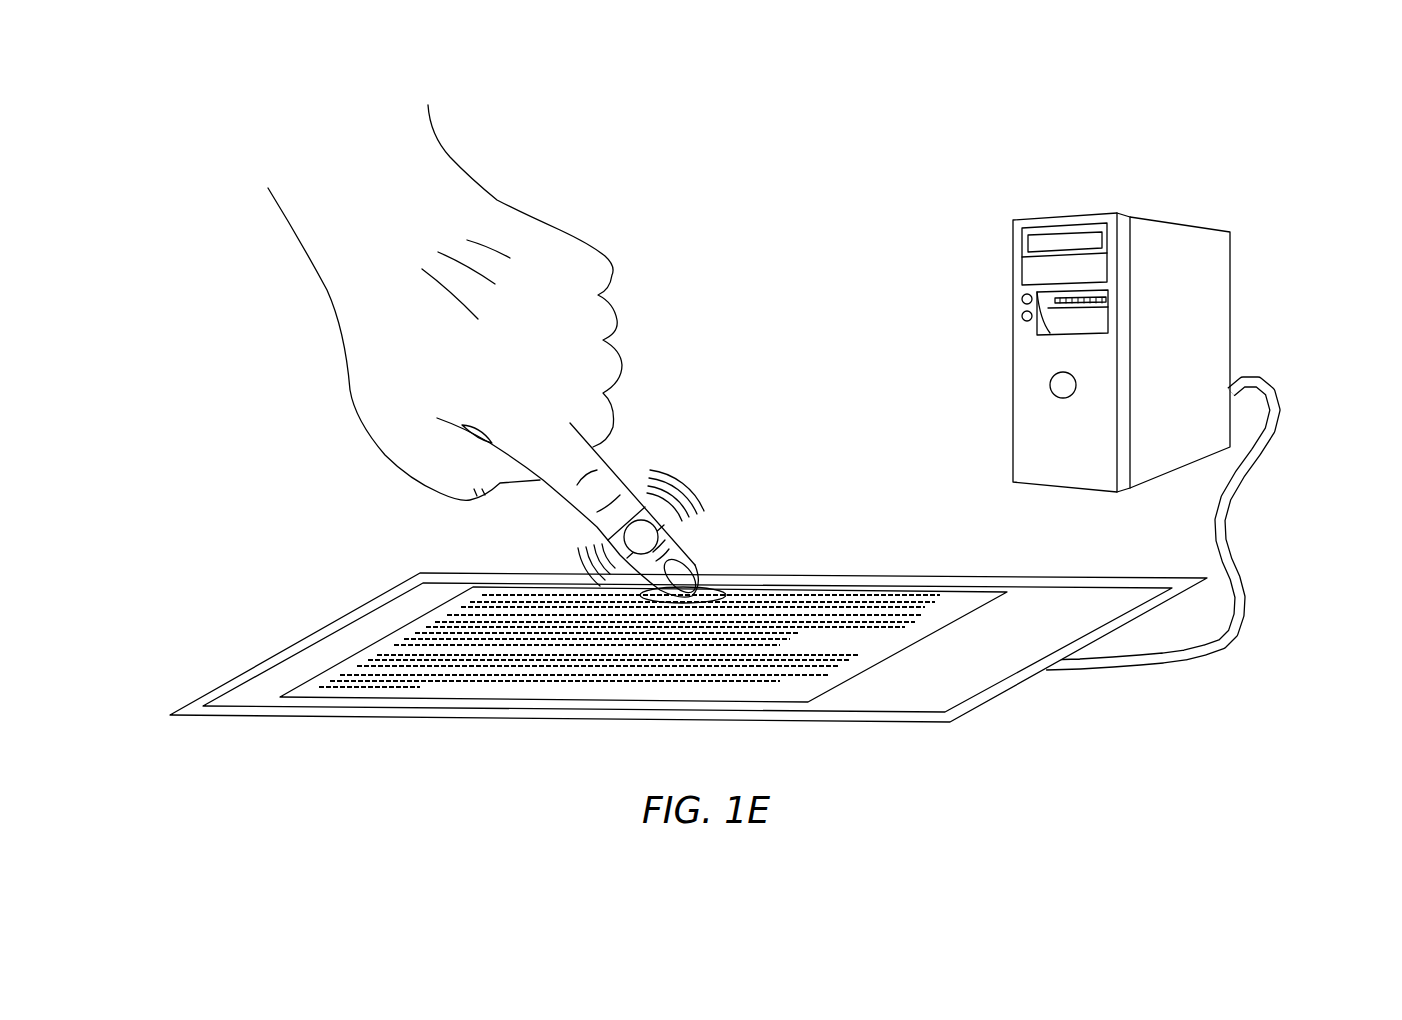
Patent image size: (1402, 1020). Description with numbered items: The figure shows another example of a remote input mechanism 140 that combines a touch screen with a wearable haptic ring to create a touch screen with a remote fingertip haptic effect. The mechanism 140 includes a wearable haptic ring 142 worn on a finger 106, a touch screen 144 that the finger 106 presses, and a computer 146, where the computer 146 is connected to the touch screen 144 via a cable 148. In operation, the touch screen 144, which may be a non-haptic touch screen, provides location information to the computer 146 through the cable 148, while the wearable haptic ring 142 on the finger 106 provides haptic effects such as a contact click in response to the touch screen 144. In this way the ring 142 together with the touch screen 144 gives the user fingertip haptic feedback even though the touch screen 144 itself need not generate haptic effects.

The remote input mechanism 140 is at (173, 137).
The finger 106 is at (578, 450).
The wearable haptic ring 142 is at (707, 478).
The touch screen 144 is at (387, 640).
The computer 146 is at (1175, 222).
The cable 148 is at (1242, 643).